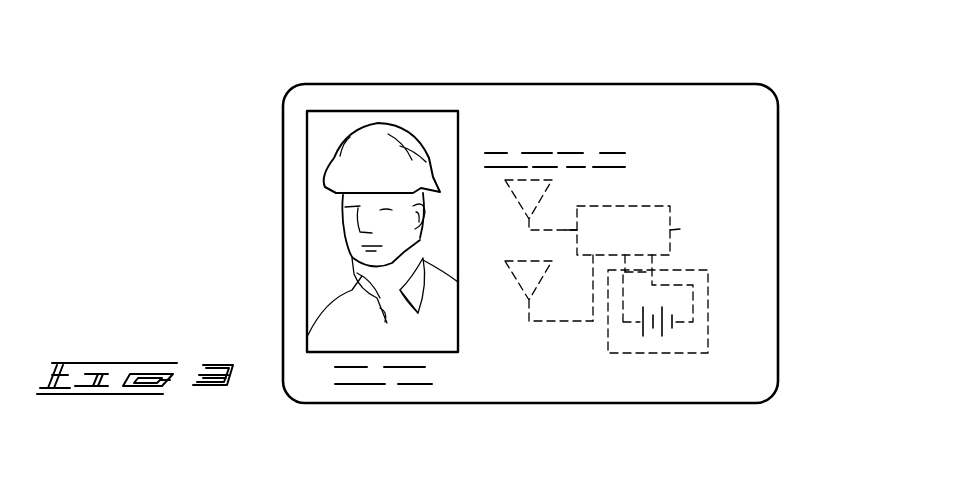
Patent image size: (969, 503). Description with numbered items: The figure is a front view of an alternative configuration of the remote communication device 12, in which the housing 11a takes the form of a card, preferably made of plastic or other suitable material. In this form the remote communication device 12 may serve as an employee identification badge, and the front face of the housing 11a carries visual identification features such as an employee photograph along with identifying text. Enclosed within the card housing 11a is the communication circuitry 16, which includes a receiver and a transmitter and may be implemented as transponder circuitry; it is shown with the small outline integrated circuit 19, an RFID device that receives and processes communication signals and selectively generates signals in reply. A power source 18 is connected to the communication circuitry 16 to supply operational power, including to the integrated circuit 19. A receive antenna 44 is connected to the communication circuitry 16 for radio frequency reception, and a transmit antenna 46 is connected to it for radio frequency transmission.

The remote communication device 12 is at (667, 60).
The housing 11a is at (283, 165).
The communication circuitry 16 is at (752, 126).
The small outline integrated circuit 19 is at (674, 229).
The power source 18 is at (708, 308).
The receive antenna 44 is at (511, 193).
The transmit antenna 46 is at (518, 280).